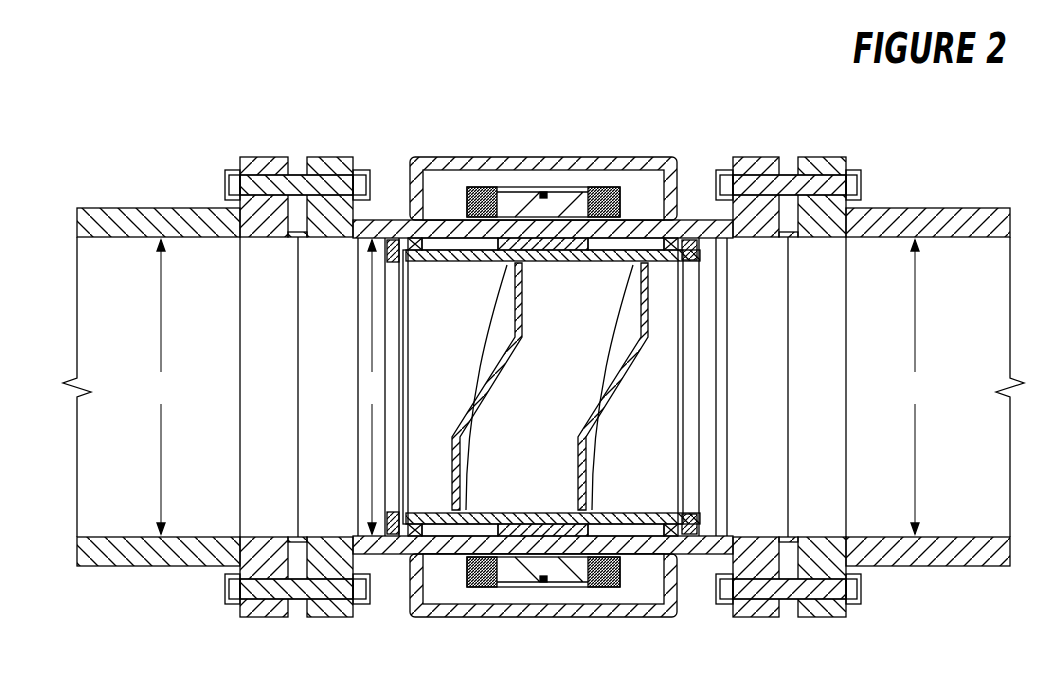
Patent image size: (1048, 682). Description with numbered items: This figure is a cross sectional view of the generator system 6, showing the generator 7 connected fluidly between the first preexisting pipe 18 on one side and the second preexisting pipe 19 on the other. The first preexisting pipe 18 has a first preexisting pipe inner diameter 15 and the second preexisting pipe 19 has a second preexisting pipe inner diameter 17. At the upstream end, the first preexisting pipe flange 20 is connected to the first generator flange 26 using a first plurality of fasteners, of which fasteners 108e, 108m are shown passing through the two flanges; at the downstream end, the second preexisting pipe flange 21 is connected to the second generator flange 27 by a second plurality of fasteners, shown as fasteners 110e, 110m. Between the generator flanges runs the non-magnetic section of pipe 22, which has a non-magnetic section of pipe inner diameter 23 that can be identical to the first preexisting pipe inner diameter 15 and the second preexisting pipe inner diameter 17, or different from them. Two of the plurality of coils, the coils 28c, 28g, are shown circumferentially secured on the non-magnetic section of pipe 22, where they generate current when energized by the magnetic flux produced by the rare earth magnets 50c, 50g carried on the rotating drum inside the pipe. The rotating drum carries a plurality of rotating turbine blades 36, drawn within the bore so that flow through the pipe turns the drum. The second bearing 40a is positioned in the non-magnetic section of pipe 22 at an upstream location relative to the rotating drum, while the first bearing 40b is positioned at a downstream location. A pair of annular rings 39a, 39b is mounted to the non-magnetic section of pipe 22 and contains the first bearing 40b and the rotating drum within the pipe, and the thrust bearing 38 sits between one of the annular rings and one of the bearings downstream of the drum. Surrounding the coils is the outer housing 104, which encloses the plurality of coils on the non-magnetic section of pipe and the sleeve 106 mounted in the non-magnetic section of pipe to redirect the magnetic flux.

The generator system 6 is at (84, 124).
The generator 7 is at (632, 86).
The first preexisting pipe inner diameter 15 is at (160, 387).
The second preexisting pipe inner diameter 17 is at (915, 387).
The first preexisting pipe 18 is at (173, 208).
The second preexisting pipe 19 is at (918, 208).
The first preexisting pipe flange 20 is at (266, 158).
The second preexisting pipe flange 21 is at (823, 158).
The non-magnetic section of pipe 22 is at (634, 220).
The non-magnetic section of pipe inner diameter 23 is at (372, 387).
The first generator flange 26 is at (346, 158).
The second generator flange 27 is at (759, 158).
The coil 28c is at (467, 205).
The coil 28g is at (467, 569).
The rotating turbine blades 36 is at (505, 315).
The thrust bearing 38 is at (690, 515).
The annular ring 39a is at (393, 263).
The annular ring 39b is at (707, 261).
The second bearing 40a is at (424, 248).
The first bearing 40b is at (663, 528).
The rare earth magnet 50c is at (527, 238).
The rare earth magnet 50g is at (527, 536).
The outer housing 104 is at (624, 150).
The sleeve 106 is at (566, 187).
The fastener 108e is at (223, 183).
The fastener 108m is at (223, 590).
The fastener 110e is at (866, 183).
The fastener 110m is at (866, 590).